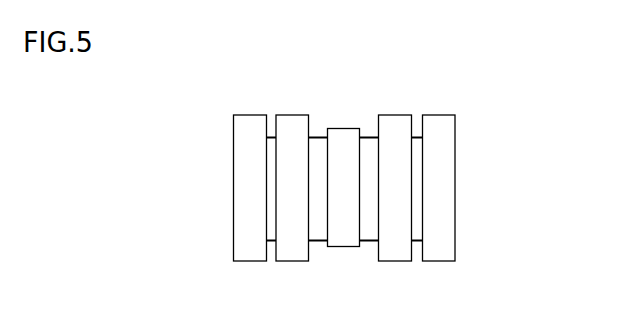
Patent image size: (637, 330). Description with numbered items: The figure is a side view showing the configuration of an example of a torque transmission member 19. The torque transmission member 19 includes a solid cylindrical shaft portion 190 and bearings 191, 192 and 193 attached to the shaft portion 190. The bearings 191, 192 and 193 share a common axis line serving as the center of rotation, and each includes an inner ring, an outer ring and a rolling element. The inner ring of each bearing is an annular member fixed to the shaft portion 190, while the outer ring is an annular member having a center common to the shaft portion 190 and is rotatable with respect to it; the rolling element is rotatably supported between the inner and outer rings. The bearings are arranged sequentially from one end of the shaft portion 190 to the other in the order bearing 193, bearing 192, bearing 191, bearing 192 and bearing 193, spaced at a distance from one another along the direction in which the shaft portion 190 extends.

The torque transmission member 19 is at (563, 106).
The shaft portion 190 is at (318, 228).
The bearing 191 is at (346, 140).
The bearing 192 is at (410, 95).
The bearing 193 is at (507, 97).